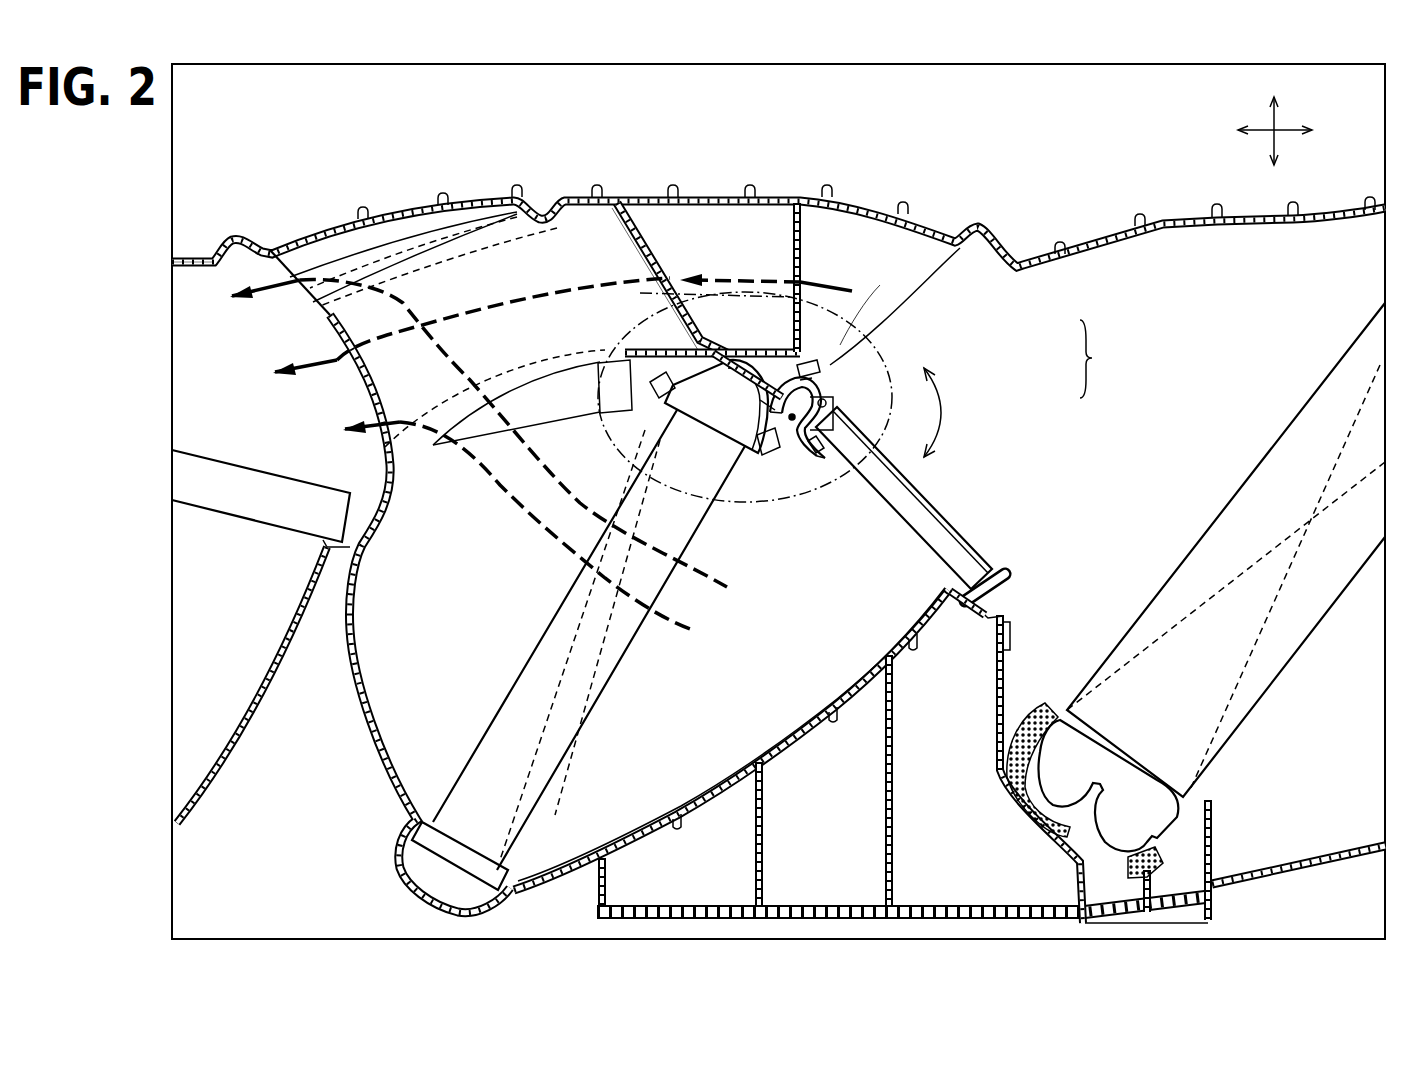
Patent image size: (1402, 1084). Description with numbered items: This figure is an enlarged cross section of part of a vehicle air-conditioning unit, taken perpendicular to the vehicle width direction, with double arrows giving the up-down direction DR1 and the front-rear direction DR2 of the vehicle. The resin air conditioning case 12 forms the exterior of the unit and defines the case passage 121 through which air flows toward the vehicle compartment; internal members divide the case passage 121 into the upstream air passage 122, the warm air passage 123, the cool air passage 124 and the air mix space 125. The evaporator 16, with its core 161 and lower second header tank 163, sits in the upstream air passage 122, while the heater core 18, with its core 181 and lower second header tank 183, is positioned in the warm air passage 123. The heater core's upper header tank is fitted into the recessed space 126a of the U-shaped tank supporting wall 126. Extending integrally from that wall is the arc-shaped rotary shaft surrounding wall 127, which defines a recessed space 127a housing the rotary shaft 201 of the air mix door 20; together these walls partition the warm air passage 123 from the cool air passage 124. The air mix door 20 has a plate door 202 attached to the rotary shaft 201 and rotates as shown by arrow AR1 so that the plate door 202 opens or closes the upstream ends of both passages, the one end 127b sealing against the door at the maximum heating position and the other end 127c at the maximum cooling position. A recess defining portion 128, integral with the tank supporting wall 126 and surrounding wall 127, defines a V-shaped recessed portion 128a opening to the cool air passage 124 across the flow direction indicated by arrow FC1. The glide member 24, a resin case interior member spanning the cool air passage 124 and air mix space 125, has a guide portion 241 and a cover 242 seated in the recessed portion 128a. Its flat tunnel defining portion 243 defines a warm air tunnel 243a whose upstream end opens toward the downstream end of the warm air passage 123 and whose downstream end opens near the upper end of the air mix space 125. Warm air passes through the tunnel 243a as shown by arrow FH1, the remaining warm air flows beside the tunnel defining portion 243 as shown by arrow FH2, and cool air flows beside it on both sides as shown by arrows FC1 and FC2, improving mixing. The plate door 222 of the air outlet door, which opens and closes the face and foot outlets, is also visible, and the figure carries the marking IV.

The air conditioning case 12 is at (1197, 217).
The case passage 121 is at (1173, 223).
The upstream air passage 122 is at (1260, 738).
The warm air passage 123 is at (605, 763).
The cool air passage 124 is at (832, 243).
The air mix space 125 is at (290, 325).
The tank supporting wall 126 is at (625, 352).
The recessed space 126a is at (717, 343).
The rotary shaft surrounding wall 127 is at (865, 405).
The recessed space 127a is at (793, 422).
The one end 127b is at (820, 376).
The other end 127c is at (819, 452).
The recess defining portion 128 is at (762, 368).
The recessed portion 128a is at (800, 343).
The evaporator 16 is at (1300, 657).
The core 161 is at (1323, 618).
The second header tank 163 is at (1120, 832).
The heater core 18 is at (497, 713).
The core 181 is at (497, 733).
The second header tank 183 is at (425, 858).
The air mix door 20 is at (1101, 359).
The rotary shaft 201 is at (848, 410).
The plate door 202 is at (937, 520).
The plate door 222 is at (216, 497).
The glide member 24 is at (332, 372).
The guide portion 241 is at (650, 237).
The cover 242 is at (815, 350).
The tunnel defining portion 243 is at (633, 240).
The warm air tunnel 243a is at (383, 358).
The arrow FH1 is at (405, 300).
The arrow FH2 is at (620, 455).
The arrow FC1 is at (735, 285).
The arrow FC2 is at (563, 293).
The arrow AR1 is at (933, 510).
The section line IV is at (957, 245).
The up-down direction DR1 is at (1282, 115).
The front-rear direction DR2 is at (1287, 134).